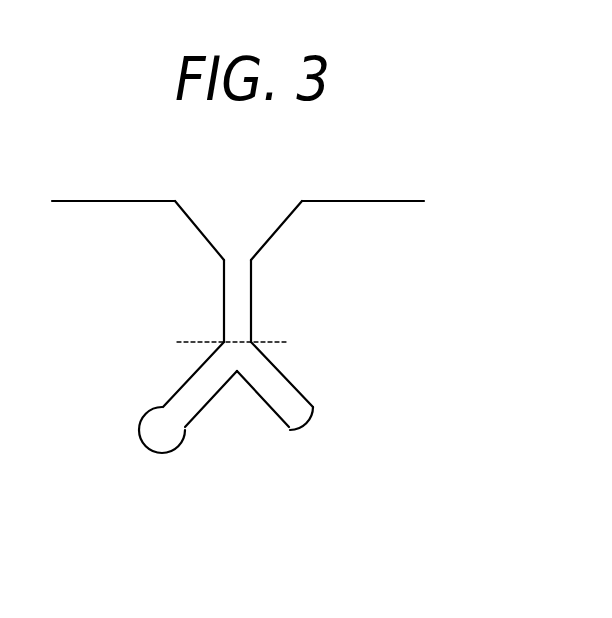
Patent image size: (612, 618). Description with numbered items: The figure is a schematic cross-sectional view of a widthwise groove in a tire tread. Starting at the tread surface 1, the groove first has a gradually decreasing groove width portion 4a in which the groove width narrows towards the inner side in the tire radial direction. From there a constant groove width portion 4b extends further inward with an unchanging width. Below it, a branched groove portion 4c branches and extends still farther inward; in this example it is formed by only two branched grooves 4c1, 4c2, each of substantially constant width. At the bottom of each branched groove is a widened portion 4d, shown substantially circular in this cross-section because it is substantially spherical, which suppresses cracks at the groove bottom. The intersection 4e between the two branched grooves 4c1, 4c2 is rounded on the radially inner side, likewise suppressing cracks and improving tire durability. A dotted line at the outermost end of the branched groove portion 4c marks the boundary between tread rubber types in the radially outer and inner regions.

The tread surface 1 is at (363, 201).
The gradually decreasing groove width portion 4a is at (207, 225).
The constant groove width portion 4b is at (230, 302).
The branched groove portion 4c is at (270, 397).
The branched groove 4c1 is at (204, 381).
The branched groove 4c2 is at (306, 384).
The widened portion 4d is at (163, 434).
The intersection 4e is at (237, 373).